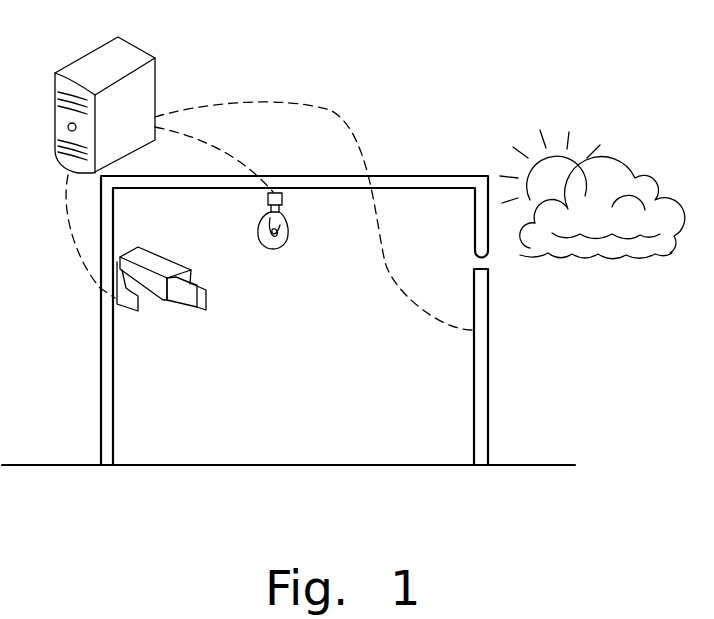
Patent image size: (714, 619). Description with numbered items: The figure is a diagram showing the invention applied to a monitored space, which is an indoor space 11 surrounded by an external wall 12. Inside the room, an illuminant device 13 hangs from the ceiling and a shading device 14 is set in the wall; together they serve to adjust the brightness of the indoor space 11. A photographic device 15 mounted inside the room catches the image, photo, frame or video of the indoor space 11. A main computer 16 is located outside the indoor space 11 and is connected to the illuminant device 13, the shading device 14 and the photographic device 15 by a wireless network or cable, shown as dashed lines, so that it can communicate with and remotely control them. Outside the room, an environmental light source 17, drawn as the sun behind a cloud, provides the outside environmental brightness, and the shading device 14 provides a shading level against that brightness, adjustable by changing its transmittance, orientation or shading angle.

The indoor space 11 is at (296, 359).
The external wall 12 is at (402, 186).
The illuminant device 13 is at (285, 218).
The shading device 14 is at (488, 367).
The photographic device 15 is at (183, 310).
The main computer 16 is at (155, 98).
The environmental light source 17 is at (597, 128).